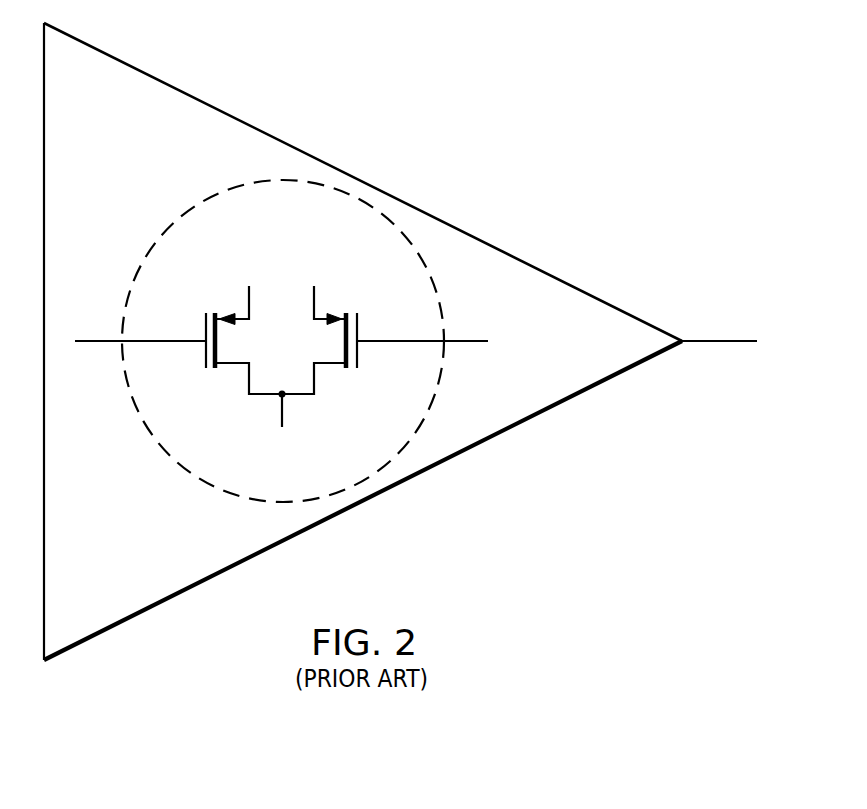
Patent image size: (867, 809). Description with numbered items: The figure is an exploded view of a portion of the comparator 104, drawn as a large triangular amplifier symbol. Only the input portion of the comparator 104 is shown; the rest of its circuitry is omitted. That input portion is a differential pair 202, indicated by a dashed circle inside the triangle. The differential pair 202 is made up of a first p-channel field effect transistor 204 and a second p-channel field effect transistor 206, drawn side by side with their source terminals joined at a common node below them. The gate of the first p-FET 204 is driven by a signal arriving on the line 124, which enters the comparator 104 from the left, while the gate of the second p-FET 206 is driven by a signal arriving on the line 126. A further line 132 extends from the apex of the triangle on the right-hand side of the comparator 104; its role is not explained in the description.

The comparator 104 is at (130, 138).
The line 124 is at (97, 338).
The line 126 is at (465, 338).
The output 132 is at (720, 338).
The differential pair 202 is at (170, 462).
The first p-channel field effect transistor 204 is at (205, 360).
The second p-channel field effect transistor 206 is at (358, 359).